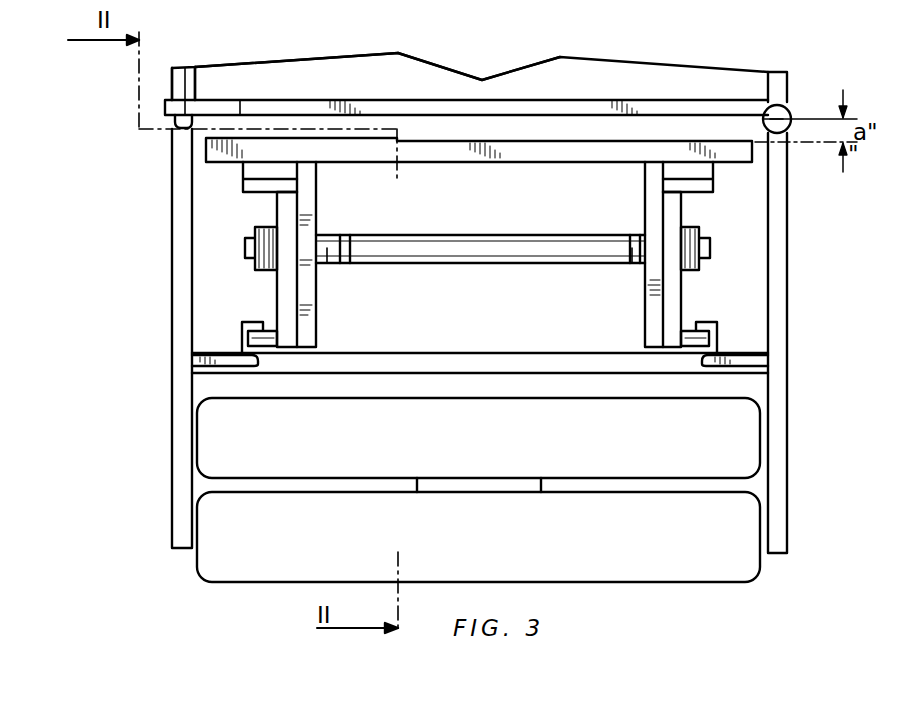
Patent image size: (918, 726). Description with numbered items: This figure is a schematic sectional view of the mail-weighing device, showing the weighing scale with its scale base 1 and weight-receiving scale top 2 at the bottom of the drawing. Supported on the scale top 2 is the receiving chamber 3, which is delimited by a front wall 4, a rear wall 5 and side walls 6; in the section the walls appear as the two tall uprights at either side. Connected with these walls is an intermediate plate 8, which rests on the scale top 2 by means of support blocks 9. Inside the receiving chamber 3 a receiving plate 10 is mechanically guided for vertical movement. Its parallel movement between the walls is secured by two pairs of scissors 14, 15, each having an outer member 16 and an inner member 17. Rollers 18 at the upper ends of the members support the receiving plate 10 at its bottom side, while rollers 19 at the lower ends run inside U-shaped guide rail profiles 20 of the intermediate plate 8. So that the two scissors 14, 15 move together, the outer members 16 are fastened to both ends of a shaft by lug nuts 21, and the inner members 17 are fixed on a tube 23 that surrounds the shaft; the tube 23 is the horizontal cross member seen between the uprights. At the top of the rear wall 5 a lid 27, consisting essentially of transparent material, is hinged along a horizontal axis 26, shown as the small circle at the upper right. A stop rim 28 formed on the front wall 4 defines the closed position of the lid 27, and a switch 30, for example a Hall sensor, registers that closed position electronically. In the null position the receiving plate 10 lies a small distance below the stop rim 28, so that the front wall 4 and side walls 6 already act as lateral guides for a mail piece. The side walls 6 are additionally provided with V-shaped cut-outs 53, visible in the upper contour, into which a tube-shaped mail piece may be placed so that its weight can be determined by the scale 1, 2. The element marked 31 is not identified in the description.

The scale base 1 is at (675, 566).
The scale top 2 is at (750, 425).
The receiving chamber 3 is at (534, 125).
The front wall 4 is at (172, 278).
The rear wall 5 is at (780, 290).
The side wall 6 is at (600, 72).
The intermediate plate 8 is at (517, 353).
The support blocks 9 is at (190, 360).
The receiving plate 10 is at (466, 148).
The pair of scissors 14 is at (356, 212).
The pair of scissors 15 is at (630, 188).
The outer member 16 is at (285, 292).
The inner member 17 is at (312, 292).
The rollers 18 is at (252, 180).
The rollers 19 is at (266, 347).
The U-shaped guide rail profiles 20 is at (242, 338).
The lug nuts 21 is at (248, 247).
The tube 23 is at (446, 248).
The horizontal axis 26 is at (789, 112).
The lid 27 is at (300, 100).
The stop rim 28 is at (176, 124).
The switch 30 is at (185, 68).
The pivot axis 31 is at (240, 125).
The cut-outs 53 is at (506, 70).